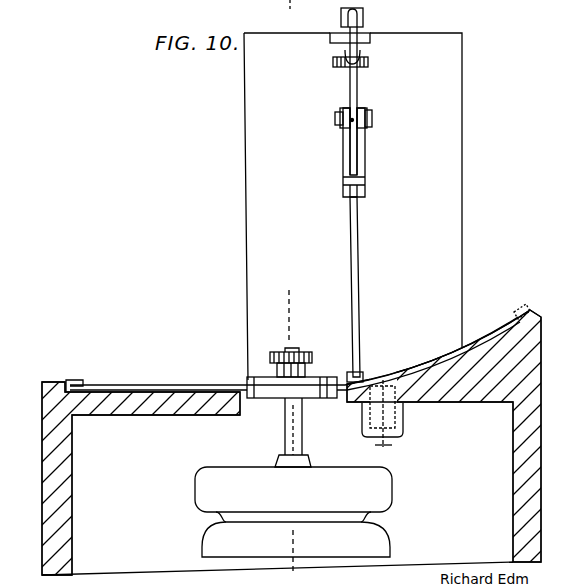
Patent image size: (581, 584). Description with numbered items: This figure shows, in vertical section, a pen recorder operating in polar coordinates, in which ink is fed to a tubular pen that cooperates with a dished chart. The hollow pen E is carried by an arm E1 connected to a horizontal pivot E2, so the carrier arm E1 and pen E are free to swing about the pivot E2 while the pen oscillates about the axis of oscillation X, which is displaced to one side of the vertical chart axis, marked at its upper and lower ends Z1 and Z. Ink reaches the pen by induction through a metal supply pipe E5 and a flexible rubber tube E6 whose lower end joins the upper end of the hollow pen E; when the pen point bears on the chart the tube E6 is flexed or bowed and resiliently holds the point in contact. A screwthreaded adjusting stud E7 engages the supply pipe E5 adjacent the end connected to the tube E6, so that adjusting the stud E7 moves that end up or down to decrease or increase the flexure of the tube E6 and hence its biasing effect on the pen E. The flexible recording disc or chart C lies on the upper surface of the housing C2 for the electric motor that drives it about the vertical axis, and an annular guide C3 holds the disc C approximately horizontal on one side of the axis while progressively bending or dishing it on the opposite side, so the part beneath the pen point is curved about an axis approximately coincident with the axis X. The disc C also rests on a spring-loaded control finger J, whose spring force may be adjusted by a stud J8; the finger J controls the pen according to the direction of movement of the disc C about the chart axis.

The metal supply pipe E5 is at (363, 15).
The screwthreaded adjusting stud E7 is at (368, 62).
The flexible rubber tube E6 is at (355, 88).
The horizontal pivot E2 is at (372, 118).
The axis of oscillation of the pen X is at (352, 120).
The carrier arm E1 is at (365, 175).
The pen E is at (358, 317).
The vertical chart axis Z is at (295, 420).
The vertical chart axis Z1 is at (286, 14).
The flexible recording disc or chart C is at (153, 390).
The housing for the electric motor C2 is at (162, 405).
The annular guide C3 is at (77, 382).
The control finger J is at (405, 405).
The adjusting stud J8 is at (388, 446).